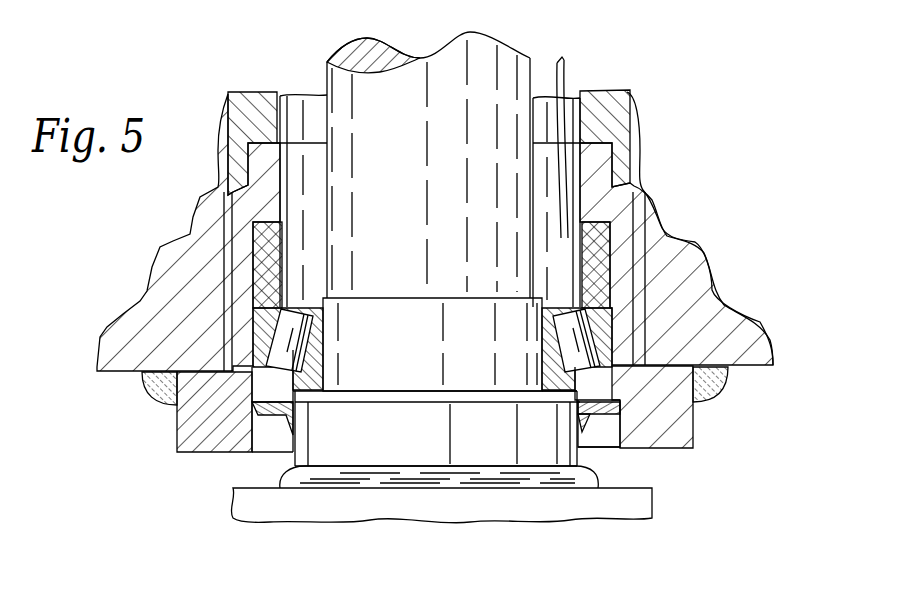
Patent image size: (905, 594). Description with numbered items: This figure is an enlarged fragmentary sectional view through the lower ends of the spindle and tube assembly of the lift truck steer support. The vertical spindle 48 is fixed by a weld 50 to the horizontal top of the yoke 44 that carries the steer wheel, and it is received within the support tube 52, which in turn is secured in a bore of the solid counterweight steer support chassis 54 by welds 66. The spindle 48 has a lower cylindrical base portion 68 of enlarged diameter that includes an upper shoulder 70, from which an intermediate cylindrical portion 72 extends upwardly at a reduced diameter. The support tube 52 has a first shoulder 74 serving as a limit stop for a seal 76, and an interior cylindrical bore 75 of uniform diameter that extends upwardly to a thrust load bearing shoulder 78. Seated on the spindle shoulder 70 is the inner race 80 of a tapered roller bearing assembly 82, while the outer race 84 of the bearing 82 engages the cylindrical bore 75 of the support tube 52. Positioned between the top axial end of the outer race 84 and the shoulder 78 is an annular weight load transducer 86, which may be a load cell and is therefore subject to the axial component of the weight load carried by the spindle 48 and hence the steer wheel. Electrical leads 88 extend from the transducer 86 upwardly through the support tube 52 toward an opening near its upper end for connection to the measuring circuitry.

The yoke 44 is at (618, 503).
The vertical spindle 48 is at (503, 60).
The weld 50 is at (282, 466).
The support tube 52 is at (617, 119).
The counterweight steer support chassis 54 is at (683, 246).
The welds 66 is at (158, 413).
The lower cylindrical base portion 68 is at (580, 455).
The upper shoulder 70 is at (490, 392).
The intermediate cylindrical portion 72 is at (427, 357).
The first shoulder 74 is at (694, 405).
The interior cylindrical bore 75 is at (262, 390).
The seal 76 is at (597, 415).
The thrust load bearing shoulder 78 is at (592, 218).
The inner race 80 is at (583, 413).
The tapered roller bearing assembly 82 is at (338, 343).
The outer race 84 is at (710, 263).
The annular weight load transducer 86 is at (587, 243).
The electrical leads 88 is at (562, 76).